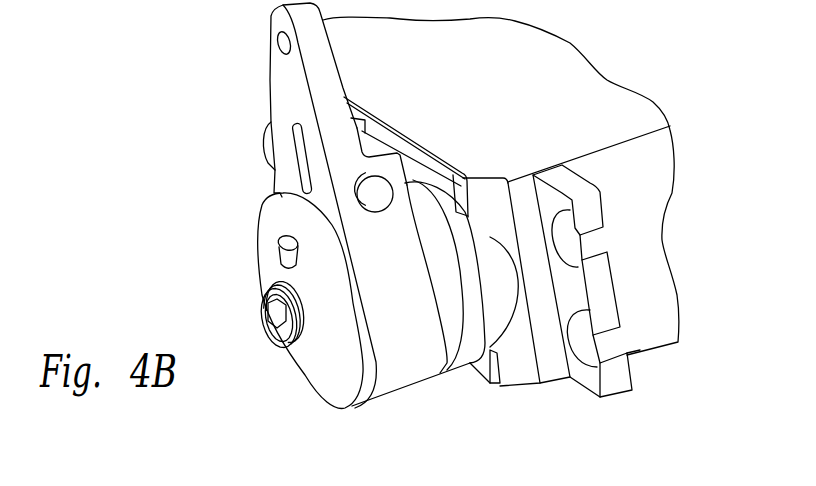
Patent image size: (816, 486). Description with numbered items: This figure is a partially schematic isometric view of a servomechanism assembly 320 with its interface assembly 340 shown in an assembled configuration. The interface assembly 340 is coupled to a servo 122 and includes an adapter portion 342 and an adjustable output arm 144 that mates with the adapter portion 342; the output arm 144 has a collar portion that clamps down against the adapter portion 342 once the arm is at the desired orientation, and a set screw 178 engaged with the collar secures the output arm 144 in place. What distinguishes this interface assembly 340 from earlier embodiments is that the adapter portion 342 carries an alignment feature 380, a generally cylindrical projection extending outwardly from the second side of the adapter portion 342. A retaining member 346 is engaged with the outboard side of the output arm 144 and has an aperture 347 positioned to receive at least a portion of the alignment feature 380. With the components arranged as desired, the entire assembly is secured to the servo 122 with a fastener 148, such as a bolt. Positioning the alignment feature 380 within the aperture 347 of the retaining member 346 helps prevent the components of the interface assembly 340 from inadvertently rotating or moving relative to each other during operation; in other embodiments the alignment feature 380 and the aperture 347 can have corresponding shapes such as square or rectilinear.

The servomechanism assembly 320 is at (108, 189).
The servo 122 is at (593, 100).
The adjustable output arm 144 is at (297, 88).
The set screw 178 is at (263, 143).
The alignment feature 380 is at (278, 247).
The aperture 347 is at (278, 258).
The fastener 148 is at (265, 318).
The interface assembly 340 is at (298, 404).
The retaining member 346 is at (343, 398).
The adapter portion 342 is at (455, 370).